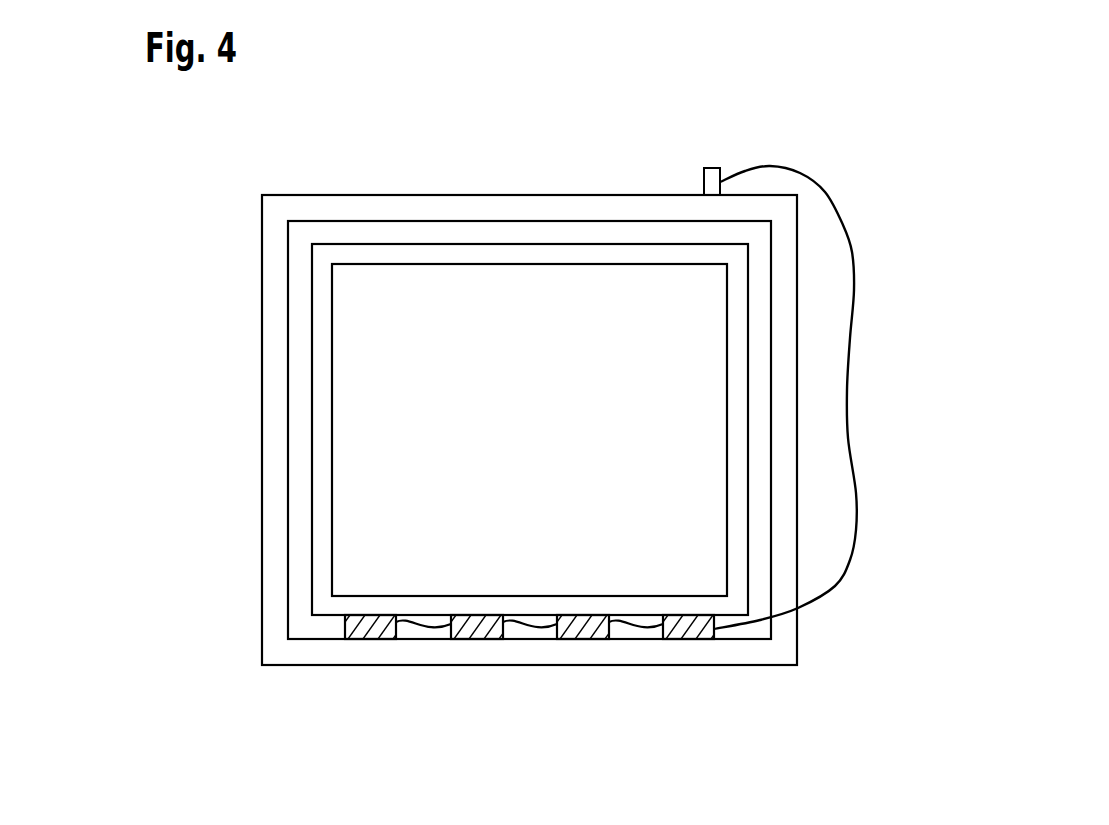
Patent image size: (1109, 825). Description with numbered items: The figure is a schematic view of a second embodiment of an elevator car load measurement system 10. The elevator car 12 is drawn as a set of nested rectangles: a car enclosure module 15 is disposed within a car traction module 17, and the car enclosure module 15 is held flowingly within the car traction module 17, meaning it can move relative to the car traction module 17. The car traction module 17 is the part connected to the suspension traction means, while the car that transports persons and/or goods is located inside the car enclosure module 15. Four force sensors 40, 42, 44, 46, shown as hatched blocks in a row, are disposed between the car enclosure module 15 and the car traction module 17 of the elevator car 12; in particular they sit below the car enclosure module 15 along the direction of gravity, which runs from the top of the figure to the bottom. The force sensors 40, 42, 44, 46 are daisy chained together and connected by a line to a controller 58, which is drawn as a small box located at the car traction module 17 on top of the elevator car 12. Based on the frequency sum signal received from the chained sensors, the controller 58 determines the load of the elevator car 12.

The elevator car load measurement system 10 is at (883, 472).
The elevator car 12 is at (542, 165).
The car enclosure module 15 is at (310, 477).
The car traction module 17 is at (262, 537).
The force sensor 40 is at (372, 630).
The force sensor 42 is at (478, 630).
The force sensor 44 is at (582, 630).
The force sensor 46 is at (688, 630).
The controller 58 is at (713, 168).